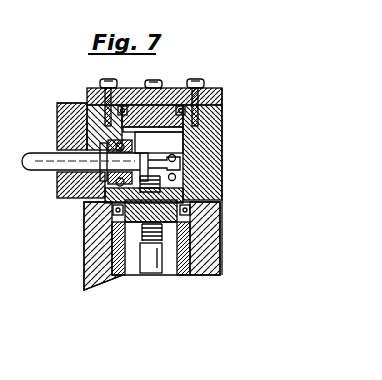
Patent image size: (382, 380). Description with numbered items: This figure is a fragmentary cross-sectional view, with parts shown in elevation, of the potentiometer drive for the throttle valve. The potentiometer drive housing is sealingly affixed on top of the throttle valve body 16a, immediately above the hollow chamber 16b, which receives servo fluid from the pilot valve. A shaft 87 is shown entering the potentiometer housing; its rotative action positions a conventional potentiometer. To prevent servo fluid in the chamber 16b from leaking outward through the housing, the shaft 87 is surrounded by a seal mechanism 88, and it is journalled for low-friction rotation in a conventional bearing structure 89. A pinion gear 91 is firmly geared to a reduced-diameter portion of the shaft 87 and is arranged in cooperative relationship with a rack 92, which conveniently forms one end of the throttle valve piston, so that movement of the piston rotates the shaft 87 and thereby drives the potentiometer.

The throttle valve body 16a is at (213, 170).
The hollow chamber 16b is at (130, 247).
The shaft 87 is at (27, 160).
The seal mechanism 88 is at (87, 110).
The bearing structure 89 is at (160, 127).
The pinion gear 91 is at (193, 88).
The rack 92 is at (160, 230).